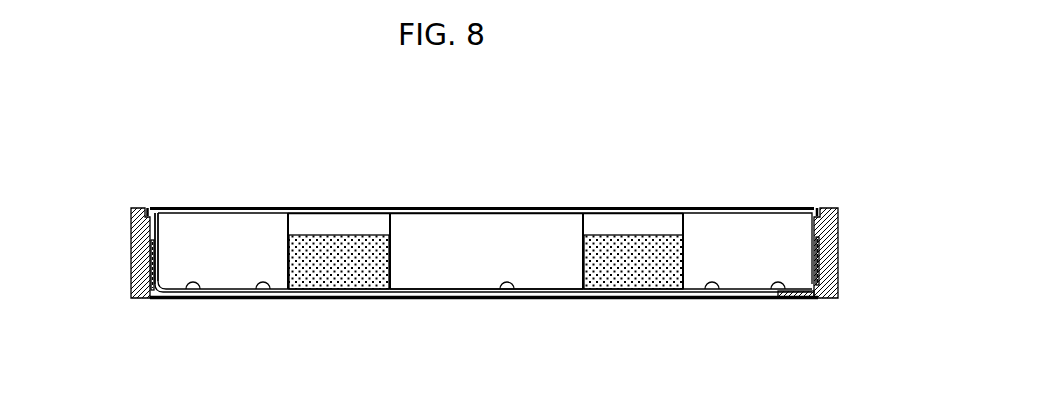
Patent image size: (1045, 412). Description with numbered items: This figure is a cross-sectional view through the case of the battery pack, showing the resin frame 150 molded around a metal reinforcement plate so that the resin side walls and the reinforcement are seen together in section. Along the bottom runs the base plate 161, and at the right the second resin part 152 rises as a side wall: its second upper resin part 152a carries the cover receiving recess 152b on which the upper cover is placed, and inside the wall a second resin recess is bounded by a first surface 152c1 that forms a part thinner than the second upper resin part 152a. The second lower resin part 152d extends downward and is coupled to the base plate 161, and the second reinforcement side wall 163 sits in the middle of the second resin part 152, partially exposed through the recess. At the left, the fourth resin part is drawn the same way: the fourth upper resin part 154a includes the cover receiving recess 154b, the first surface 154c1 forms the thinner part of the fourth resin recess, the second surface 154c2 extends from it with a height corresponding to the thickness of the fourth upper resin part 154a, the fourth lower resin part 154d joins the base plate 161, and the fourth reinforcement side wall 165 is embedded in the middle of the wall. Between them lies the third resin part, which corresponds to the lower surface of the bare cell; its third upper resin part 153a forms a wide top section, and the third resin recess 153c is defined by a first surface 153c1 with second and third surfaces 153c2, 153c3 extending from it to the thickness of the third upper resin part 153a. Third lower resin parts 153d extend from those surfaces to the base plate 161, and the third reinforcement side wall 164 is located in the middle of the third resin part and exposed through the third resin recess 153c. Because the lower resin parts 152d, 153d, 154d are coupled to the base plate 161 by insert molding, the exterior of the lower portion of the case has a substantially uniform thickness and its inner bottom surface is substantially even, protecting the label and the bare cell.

The resin frame 150 is at (260, 134).
The second resin part 152 is at (838, 224).
The second upper resin part 152a is at (830, 208).
The cover receiving recess 152b is at (818, 207).
The first surface 152c1 is at (836, 253).
The second lower resin part 152d is at (770, 293).
The third upper resin part 153a is at (463, 222).
The third resin recess 153c is at (718, 135).
The first surface 153c1 is at (338, 222).
The second surface 153c2 is at (678, 215).
The third surface 153c3 is at (592, 210).
The third lower resin part 153d is at (270, 293).
The fourth upper resin part 154a is at (131, 209).
The cover receiving recess 154b is at (147, 208).
The first surface 154c1 is at (150, 224).
The second surface 154c2 is at (158, 228).
The fourth lower resin part 154d is at (201, 293).
The base plate 161 is at (424, 300).
The second reinforcement side wall 163 is at (838, 268).
The third reinforcement side wall 164 is at (640, 270).
The fourth reinforcement side wall 165 is at (131, 272).